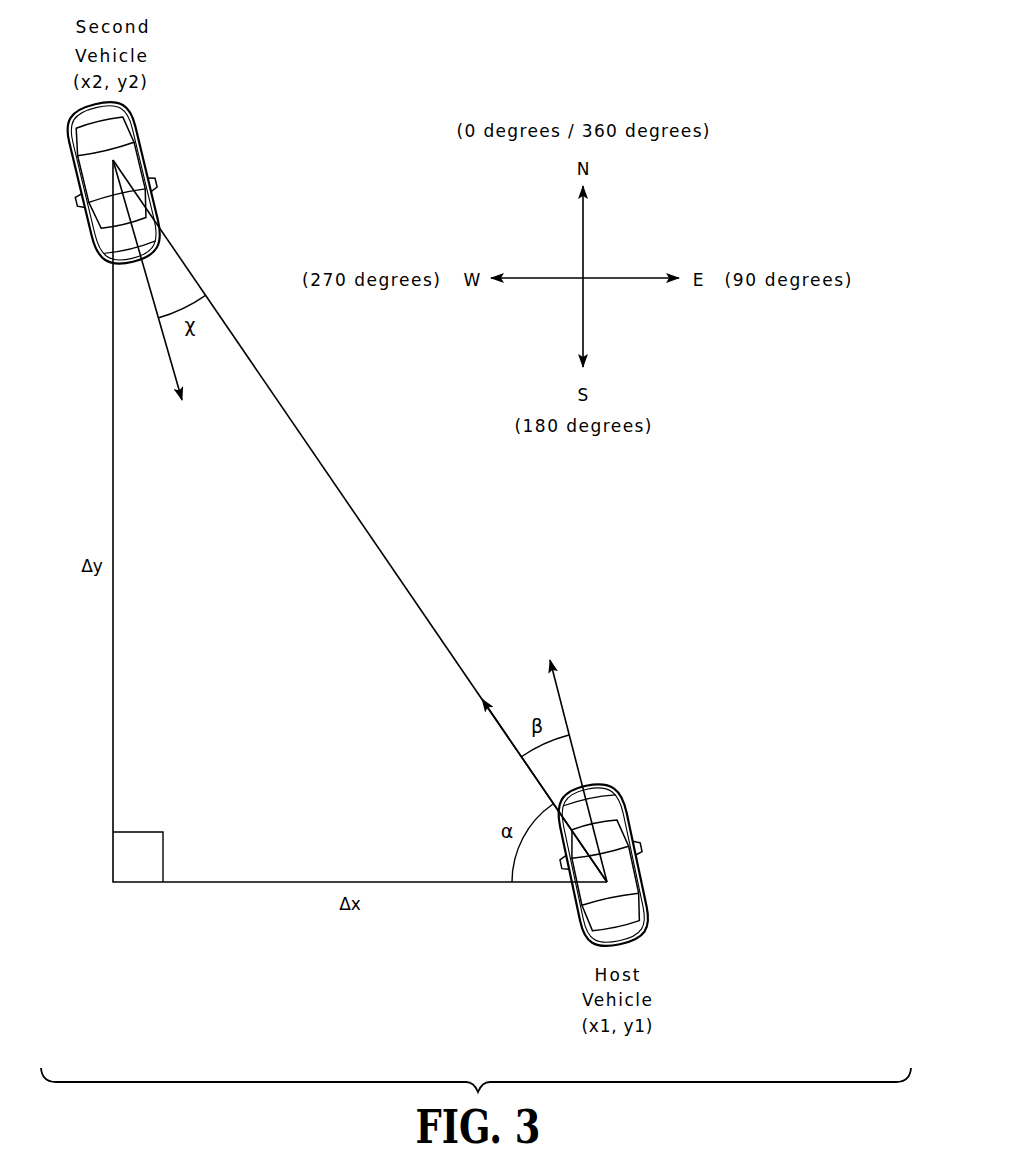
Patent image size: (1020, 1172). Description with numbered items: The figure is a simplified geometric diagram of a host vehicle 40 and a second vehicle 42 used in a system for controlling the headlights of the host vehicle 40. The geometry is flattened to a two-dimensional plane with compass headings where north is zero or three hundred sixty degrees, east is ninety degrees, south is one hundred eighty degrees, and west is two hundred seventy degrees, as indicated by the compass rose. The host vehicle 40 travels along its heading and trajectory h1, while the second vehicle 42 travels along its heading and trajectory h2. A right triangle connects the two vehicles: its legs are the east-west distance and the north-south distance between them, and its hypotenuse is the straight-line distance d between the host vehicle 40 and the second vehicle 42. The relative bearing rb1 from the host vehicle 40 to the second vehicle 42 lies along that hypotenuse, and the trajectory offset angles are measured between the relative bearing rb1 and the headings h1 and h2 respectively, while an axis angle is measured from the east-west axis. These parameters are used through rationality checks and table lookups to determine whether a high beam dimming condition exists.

The host vehicle 40 is at (640, 850).
The second vehicle 42 is at (83, 187).
The heading and trajectory of the host vehicle h1 is at (570, 756).
The heading and trajectory of the second vehicle h2 is at (156, 298).
The relative bearing rb1 is at (541, 771).
The straight-line distance d is at (360, 521).